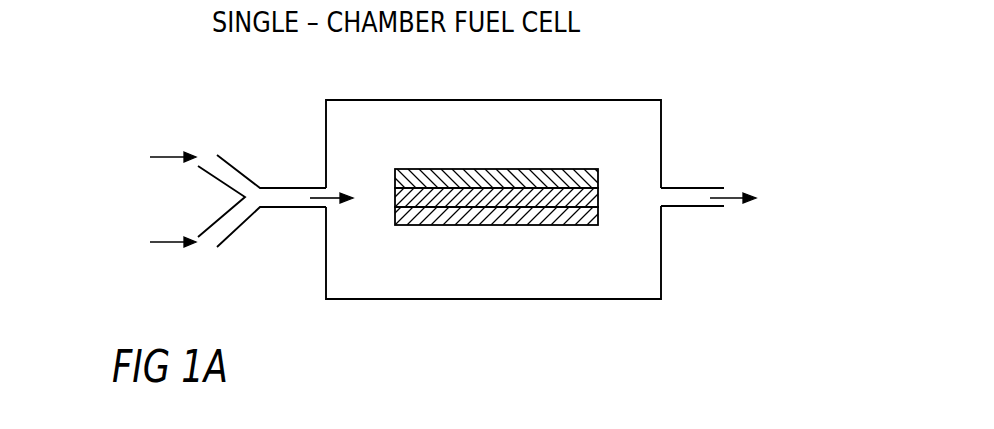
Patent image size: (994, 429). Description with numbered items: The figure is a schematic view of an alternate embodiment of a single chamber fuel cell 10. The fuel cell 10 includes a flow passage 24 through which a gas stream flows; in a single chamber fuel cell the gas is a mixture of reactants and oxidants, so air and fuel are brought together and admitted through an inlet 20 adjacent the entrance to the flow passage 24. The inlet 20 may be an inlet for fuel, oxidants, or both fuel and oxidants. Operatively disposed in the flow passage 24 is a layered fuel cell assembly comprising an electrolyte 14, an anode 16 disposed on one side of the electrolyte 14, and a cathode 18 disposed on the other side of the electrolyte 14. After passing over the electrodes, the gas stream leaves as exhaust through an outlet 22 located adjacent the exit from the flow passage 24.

The fuel cell 10 is at (510, 190).
The electrolyte 14 is at (598, 190).
The anode 16 is at (573, 226).
The cathode 18 is at (568, 170).
The inlet 20 is at (267, 208).
The outlet 22 is at (700, 187).
The flow passage 24 is at (448, 278).